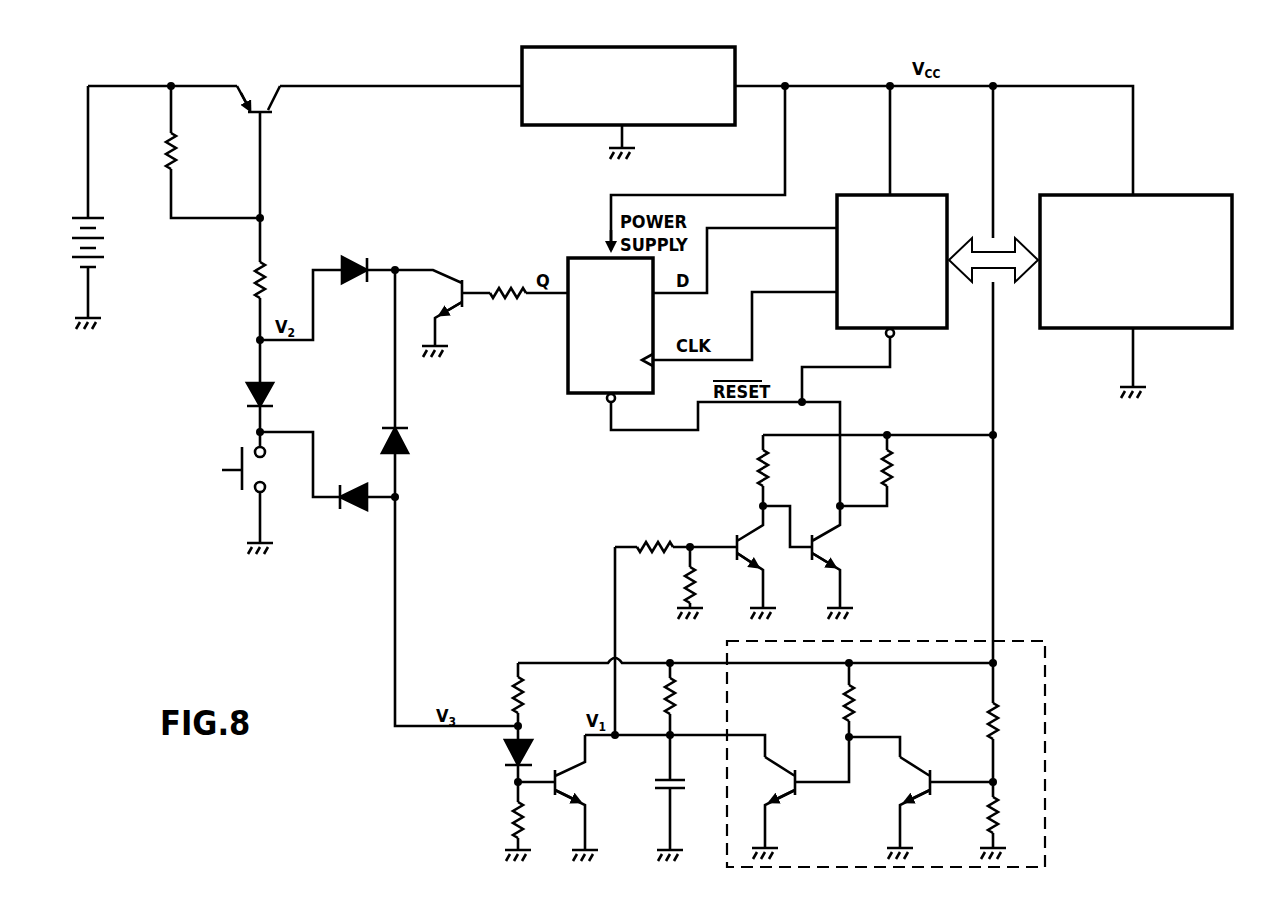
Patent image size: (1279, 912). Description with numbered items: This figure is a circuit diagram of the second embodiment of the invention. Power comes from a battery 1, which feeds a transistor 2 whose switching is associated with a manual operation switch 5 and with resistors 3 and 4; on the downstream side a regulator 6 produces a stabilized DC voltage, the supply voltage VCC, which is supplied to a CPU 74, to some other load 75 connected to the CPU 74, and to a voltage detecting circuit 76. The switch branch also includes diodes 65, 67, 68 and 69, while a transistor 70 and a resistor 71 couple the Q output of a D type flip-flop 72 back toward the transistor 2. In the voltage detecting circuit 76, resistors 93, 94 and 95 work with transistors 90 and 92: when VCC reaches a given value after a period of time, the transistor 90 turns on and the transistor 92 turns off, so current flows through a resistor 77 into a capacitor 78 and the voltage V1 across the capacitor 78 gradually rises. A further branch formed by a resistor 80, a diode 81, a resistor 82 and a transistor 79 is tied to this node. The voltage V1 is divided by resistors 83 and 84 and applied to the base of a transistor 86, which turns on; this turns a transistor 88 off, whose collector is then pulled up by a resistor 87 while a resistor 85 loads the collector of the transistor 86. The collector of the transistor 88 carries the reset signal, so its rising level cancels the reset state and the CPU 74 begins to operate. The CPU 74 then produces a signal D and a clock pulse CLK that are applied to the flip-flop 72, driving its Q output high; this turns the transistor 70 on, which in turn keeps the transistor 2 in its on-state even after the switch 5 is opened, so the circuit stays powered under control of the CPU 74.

The battery 1 is at (104, 243).
The bipolar transistor 2 is at (262, 98).
The resistor 3 is at (176, 152).
The resistor 4 is at (255, 287).
The manual operation switch 5 is at (234, 480).
The regulator 6 is at (522, 98).
The diode 65 is at (274, 395).
The diode 67 is at (348, 482).
The diode 68 is at (408, 445).
The diode 69 is at (357, 255).
The bipolar transistor 70 is at (458, 278).
The resistor 71 is at (508, 300).
The D type flip-flop 72 is at (568, 373).
The CPU 74 is at (920, 195).
The other load 75 is at (1165, 195).
The voltage detecting circuit 76 is at (1045, 760).
The resistor 77 is at (676, 700).
The capacitor 78 is at (686, 784).
The bipolar transistor 79 is at (560, 784).
The resistor 80 is at (524, 693).
The diode 81 is at (504, 750).
The resistor 82 is at (512, 818).
The resistor 83 is at (658, 537).
The resistor 84 is at (683, 580).
The resistor 85 is at (770, 470).
The bipolar transistor 86 is at (740, 548).
The resistor 87 is at (893, 472).
The bipolar transistor 88 is at (820, 548).
The bipolar transistor 90 is at (912, 780).
The bipolar transistor 92 is at (780, 780).
The resistor 93 is at (855, 700).
The resistor 94 is at (988, 718).
The resistor 95 is at (988, 815).